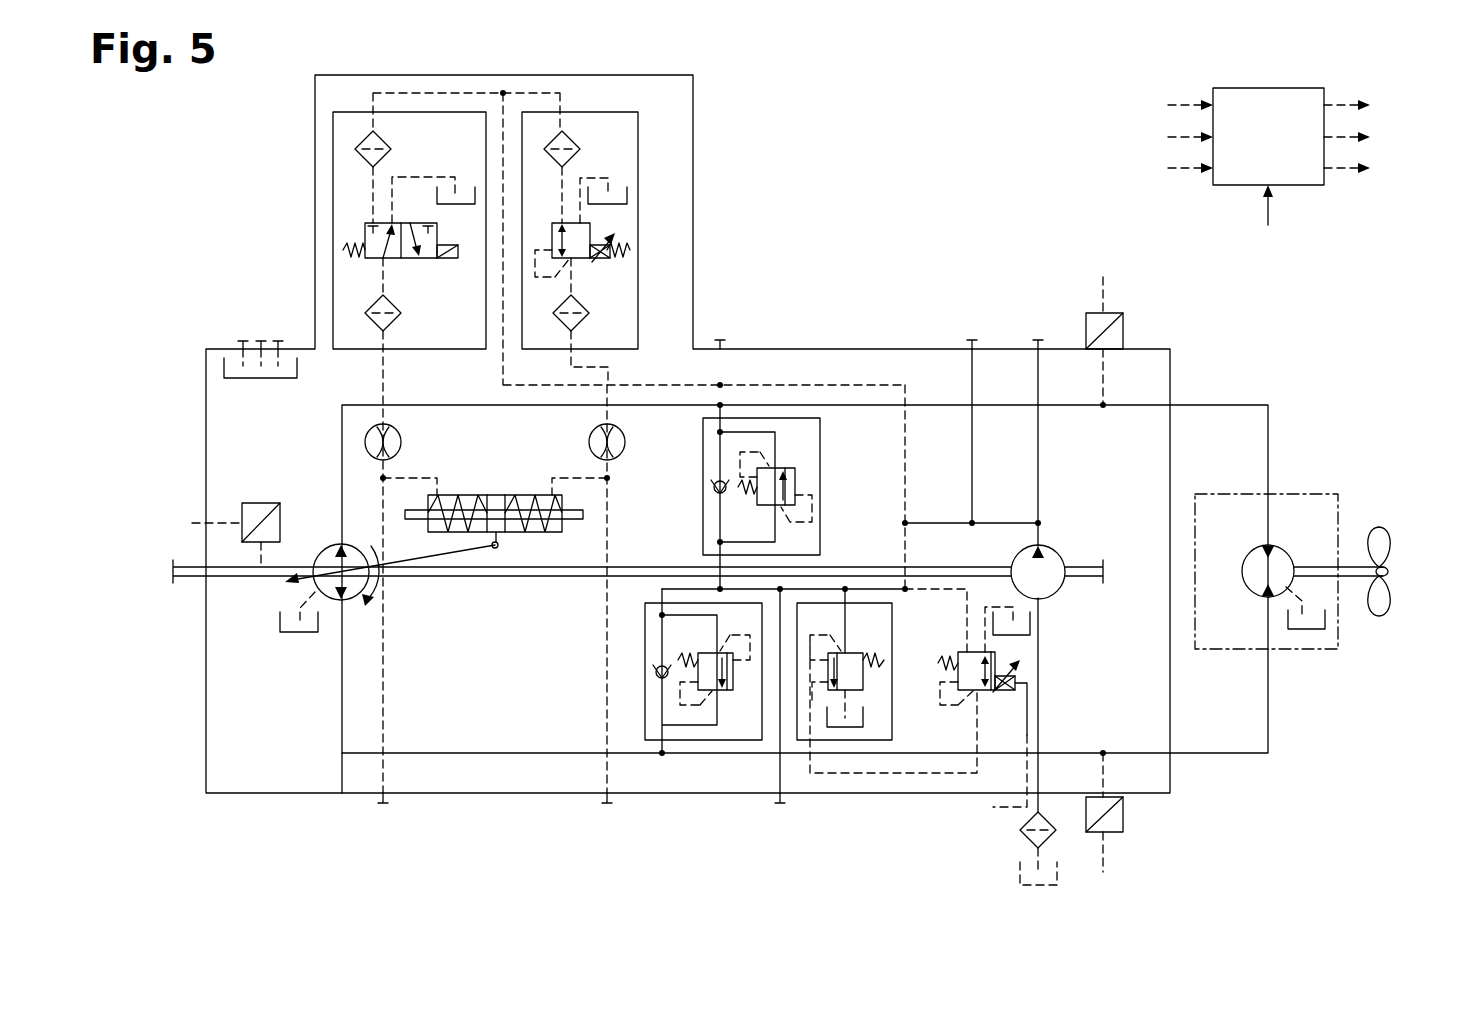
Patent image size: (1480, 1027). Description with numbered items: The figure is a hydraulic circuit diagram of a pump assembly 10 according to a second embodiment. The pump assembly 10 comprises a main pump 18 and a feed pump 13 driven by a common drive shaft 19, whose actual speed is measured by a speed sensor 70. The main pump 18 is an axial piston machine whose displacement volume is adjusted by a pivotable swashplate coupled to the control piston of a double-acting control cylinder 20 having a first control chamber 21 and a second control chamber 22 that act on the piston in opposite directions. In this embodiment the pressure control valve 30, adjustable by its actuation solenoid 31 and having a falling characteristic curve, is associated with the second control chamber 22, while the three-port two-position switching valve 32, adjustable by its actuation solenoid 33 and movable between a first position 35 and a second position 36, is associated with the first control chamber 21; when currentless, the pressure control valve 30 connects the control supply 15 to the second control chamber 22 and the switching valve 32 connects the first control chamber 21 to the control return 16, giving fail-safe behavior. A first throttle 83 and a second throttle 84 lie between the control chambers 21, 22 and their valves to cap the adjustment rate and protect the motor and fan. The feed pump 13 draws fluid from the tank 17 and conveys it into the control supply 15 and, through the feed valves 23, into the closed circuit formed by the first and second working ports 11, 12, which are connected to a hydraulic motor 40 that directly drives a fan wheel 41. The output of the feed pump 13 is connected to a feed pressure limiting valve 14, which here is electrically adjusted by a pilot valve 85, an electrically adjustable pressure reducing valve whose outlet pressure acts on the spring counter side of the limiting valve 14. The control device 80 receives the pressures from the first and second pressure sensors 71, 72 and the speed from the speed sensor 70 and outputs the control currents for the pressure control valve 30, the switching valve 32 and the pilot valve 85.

The pump assembly 10 is at (978, 140).
The first working port 11 is at (1172, 768).
The second working port 12 is at (1172, 400).
The feed pump 13 is at (1050, 598).
The feed pressure limiting valve 14 is at (832, 692).
The control supply 15 is at (535, 93).
The control return 16 is at (373, 185).
The tank 17 is at (437, 196).
The main pump 18 is at (318, 592).
The drive shaft 19 is at (206, 580).
The control cylinder 20 is at (504, 494).
The first control chamber 21 is at (462, 494).
The second control chamber 22 is at (545, 494).
The feed valve 23 is at (704, 490).
The pressure control valve 30 is at (639, 255).
The actuation solenoid of the pressure control valve 31 is at (603, 262).
The 3/2-way switching valve 32 is at (320, 255).
The actuation solenoid of the 3/2-way switching valve 33 is at (440, 262).
The first position 35 is at (363, 250).
The second position 36 is at (401, 240).
The hydraulic motor 40 is at (1280, 544).
The fan wheel 41 is at (1389, 583).
The speed sensor 70 is at (243, 542).
The first pressure sensor 71 is at (1112, 832).
The second pressure sensor 72 is at (1123, 325).
The control device 80 is at (1305, 185).
The first throttle 83 is at (365, 446).
The second throttle 84 is at (623, 455).
The pilot valve of the feed pressure limiting valve 85 is at (985, 690).